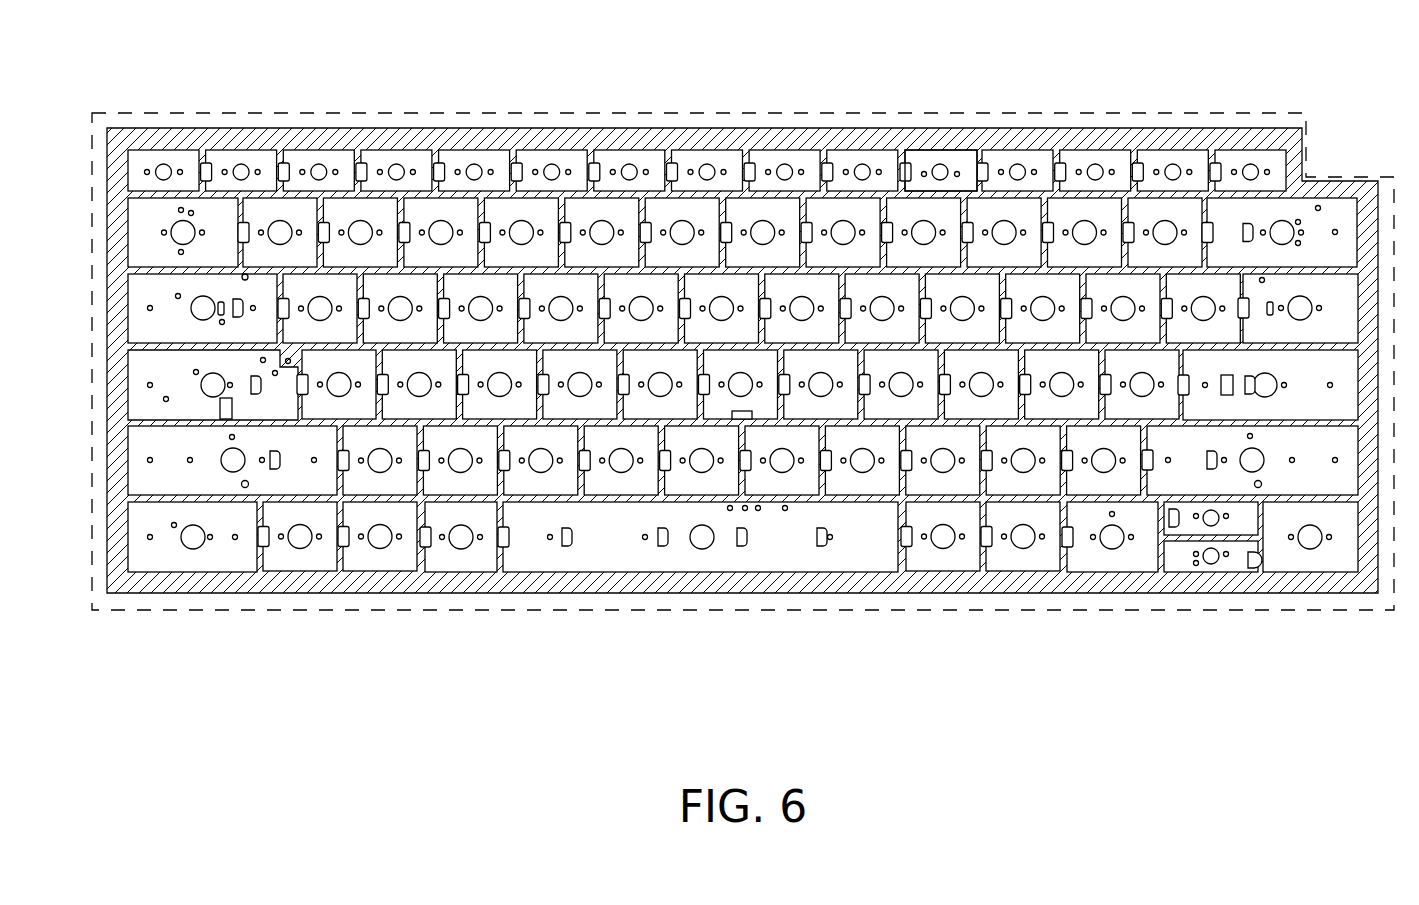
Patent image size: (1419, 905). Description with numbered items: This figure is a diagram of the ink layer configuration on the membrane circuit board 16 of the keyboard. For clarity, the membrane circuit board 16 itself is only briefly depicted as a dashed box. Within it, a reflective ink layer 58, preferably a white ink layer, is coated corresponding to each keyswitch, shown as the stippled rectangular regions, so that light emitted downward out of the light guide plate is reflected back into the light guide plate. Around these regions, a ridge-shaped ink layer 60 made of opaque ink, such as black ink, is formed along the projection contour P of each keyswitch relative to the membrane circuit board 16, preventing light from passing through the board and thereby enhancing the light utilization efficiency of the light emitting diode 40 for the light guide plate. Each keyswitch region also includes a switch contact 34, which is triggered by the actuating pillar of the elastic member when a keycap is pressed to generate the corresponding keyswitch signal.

The membrane circuit board 16 is at (210, 113).
The switch contact 34 is at (940, 164).
The light emitting diode 40 is at (923, 171).
The reflective ink layer 58 is at (928, 157).
The ridge-shaped ink layer 60 is at (1065, 138).
The projection contour P is at (972, 152).